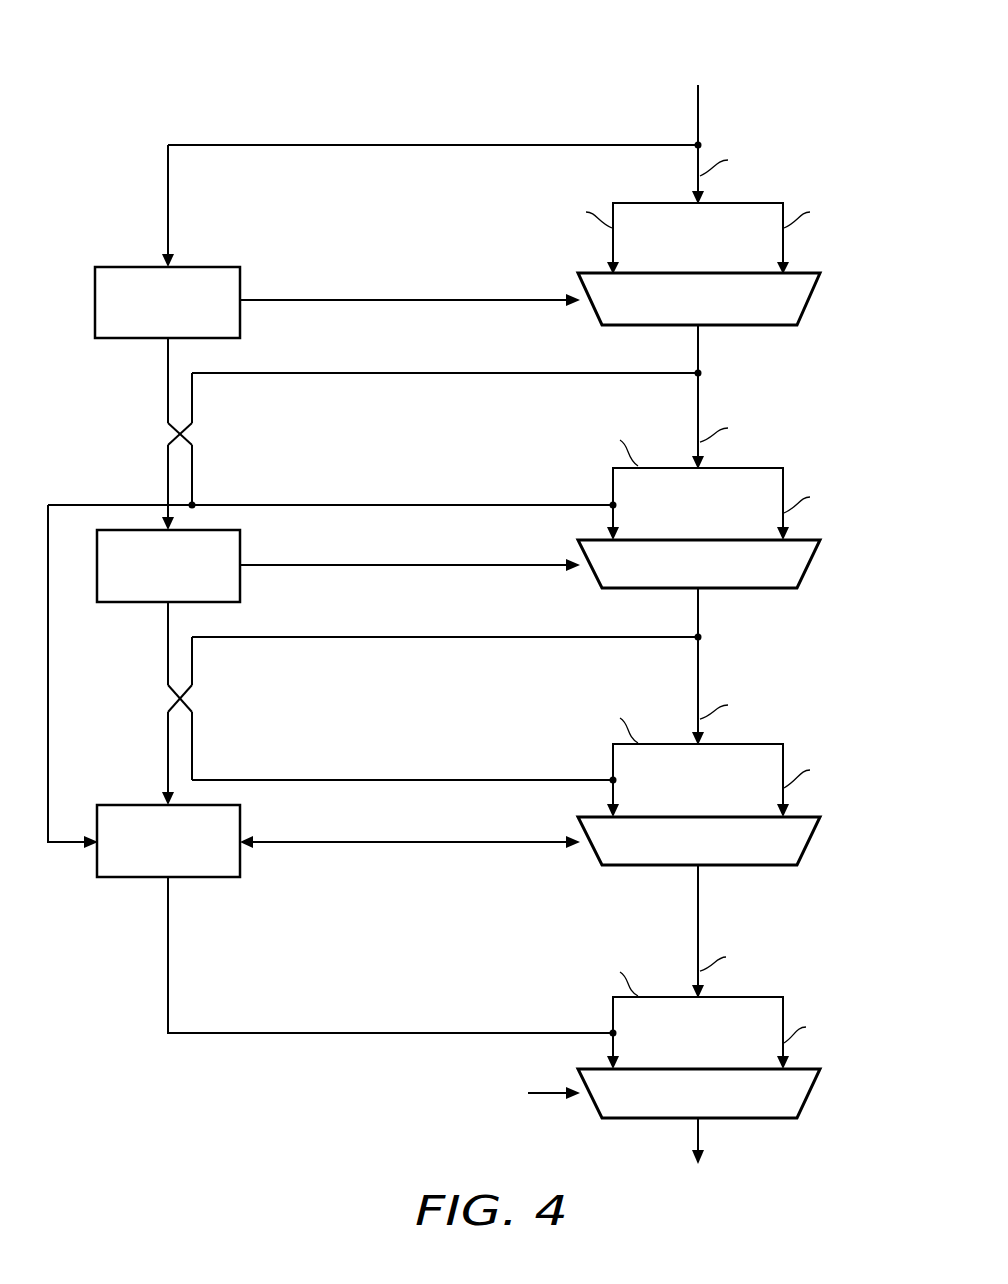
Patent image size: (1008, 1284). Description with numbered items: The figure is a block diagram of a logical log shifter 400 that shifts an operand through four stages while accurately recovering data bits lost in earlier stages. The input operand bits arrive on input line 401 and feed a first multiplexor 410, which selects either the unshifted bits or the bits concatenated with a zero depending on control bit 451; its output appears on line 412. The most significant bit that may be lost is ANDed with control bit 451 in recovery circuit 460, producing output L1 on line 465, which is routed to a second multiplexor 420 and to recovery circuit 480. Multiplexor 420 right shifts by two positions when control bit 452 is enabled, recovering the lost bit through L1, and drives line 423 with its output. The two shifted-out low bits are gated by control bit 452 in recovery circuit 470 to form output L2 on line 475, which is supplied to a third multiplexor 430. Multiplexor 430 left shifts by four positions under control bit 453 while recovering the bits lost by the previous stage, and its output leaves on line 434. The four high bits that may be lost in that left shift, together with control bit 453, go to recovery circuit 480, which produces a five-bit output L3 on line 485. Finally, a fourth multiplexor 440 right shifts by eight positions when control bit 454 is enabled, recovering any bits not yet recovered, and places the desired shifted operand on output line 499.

The log shifter 400 is at (352, 62).
The input line 401 is at (697, 118).
The multiplexor 410 is at (810, 300).
The output line 412 is at (700, 340).
The multiplexor 420 is at (810, 564).
The output line 423 is at (700, 602).
The multiplexor 430 is at (810, 840).
The output line 434 is at (700, 875).
The multiplexor 440 is at (810, 1094).
The output line 499 is at (700, 1132).
The control bit 451 is at (360, 298).
The control bit 452 is at (392, 568).
The control bit 453 is at (393, 845).
The control bit 454 is at (556, 1098).
The recovery circuit 460 is at (143, 264).
The output line L1 465 is at (167, 360).
The recovery circuit 470 is at (243, 550).
The output line L2 475 is at (167, 626).
The recovery circuit 480 is at (145, 880).
The output line L3 485 is at (393, 1036).